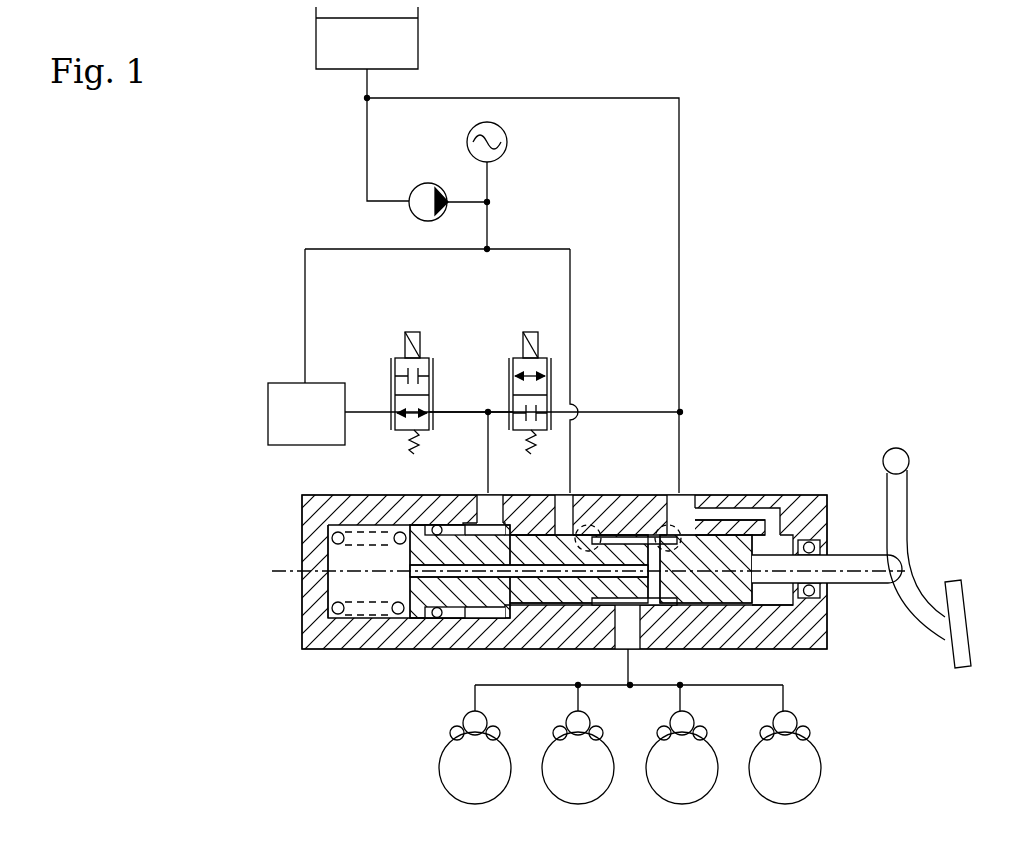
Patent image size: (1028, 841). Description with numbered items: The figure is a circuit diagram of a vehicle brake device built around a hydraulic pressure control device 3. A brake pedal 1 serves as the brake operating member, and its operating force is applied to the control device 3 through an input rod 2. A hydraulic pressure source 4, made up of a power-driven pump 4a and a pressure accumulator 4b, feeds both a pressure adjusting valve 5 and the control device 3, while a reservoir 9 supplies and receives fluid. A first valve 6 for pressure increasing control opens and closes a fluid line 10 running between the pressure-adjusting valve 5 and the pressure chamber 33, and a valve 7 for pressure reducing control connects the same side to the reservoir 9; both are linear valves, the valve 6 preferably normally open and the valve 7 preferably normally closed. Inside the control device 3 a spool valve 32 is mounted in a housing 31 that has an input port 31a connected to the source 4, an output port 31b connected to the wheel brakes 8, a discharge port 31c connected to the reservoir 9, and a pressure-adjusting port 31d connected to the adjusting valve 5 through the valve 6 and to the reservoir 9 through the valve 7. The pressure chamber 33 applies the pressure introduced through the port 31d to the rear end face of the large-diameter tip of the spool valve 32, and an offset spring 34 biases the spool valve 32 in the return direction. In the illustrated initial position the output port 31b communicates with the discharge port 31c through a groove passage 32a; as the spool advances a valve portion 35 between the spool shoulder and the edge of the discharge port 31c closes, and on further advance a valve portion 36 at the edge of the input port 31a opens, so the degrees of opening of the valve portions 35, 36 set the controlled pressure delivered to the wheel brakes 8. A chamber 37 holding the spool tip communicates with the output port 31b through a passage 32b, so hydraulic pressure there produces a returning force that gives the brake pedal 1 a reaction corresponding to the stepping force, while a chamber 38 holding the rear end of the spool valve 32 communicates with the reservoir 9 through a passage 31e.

The brake pedal 1 is at (958, 615).
The input rod 2 is at (853, 577).
The hydraulic pressure control device 3 is at (618, 563).
The hydraulic pressure source 4 is at (447, 167).
The power-driven pump 4a is at (428, 181).
The pressure accumulator 4b is at (470, 131).
The pressure adjusting valve 5 is at (280, 406).
The first valve 6 is at (398, 362).
The valve 7 is at (517, 362).
The wheel brakes 8 is at (762, 788).
The reservoir 9 is at (413, 44).
The fluid line 10 is at (450, 410).
The housing 31 is at (300, 503).
The input port 31a is at (565, 497).
The output port 31b is at (632, 640).
The discharge port 31c is at (682, 507).
The pressure-adjusting port 31d is at (490, 503).
The passage 31e is at (743, 513).
The spool valve 32 is at (527, 567).
The groove passage 32a is at (627, 490).
The passage 32b is at (513, 578).
The pressure chamber 33 is at (430, 493).
The offset spring 34 is at (330, 612).
The valve portion 35 is at (665, 522).
The valve portion 36 is at (592, 522).
The chamber 37 is at (328, 580).
The chamber 38 is at (772, 597).